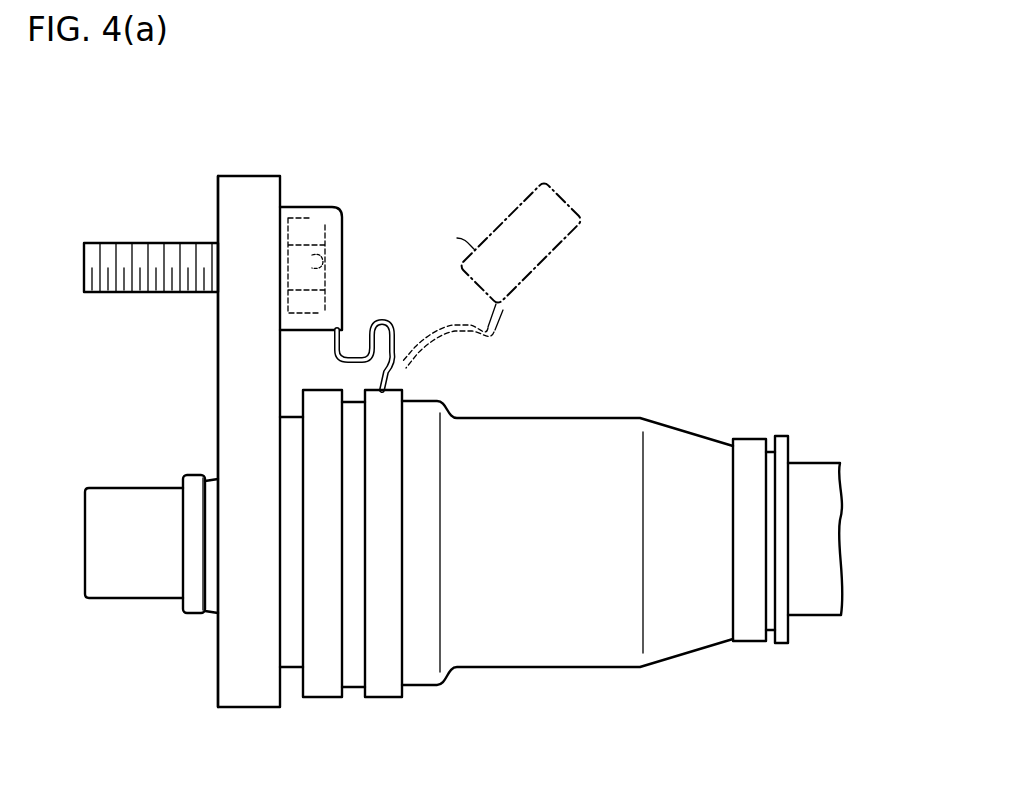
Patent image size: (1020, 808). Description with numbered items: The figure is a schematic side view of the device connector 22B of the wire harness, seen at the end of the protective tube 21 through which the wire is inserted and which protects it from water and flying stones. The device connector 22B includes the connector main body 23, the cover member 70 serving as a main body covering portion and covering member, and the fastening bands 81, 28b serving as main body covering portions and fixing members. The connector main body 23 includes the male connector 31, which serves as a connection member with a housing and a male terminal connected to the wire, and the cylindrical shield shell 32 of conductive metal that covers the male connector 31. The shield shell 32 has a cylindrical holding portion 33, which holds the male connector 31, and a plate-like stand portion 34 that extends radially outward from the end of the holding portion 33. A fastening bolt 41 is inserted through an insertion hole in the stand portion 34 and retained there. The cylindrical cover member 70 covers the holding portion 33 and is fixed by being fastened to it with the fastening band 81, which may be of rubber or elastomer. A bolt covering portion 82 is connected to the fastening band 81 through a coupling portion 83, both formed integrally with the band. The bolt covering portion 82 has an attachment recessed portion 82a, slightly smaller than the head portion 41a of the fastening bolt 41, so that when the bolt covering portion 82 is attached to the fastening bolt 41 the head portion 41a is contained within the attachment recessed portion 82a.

The protective tube 21 is at (822, 463).
The device connector 22B is at (750, 252).
The connector main body 23 is at (194, 210).
The fastening band 28b is at (750, 439).
The male connector 31 is at (125, 488).
The shield shell 32 is at (228, 398).
The holding portion 33 is at (290, 668).
The stand portion 34 is at (240, 176).
The fastening bolt 41 is at (125, 293).
The head portion 41a is at (310, 222).
The cover member 70 is at (548, 418).
The fastening band 81 is at (396, 374).
The bolt covering portion 82 is at (457, 238).
The attachment recessed portion 82a is at (325, 260).
The coupling portion 83 is at (453, 325).